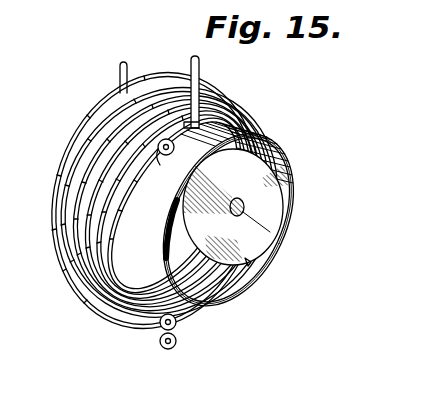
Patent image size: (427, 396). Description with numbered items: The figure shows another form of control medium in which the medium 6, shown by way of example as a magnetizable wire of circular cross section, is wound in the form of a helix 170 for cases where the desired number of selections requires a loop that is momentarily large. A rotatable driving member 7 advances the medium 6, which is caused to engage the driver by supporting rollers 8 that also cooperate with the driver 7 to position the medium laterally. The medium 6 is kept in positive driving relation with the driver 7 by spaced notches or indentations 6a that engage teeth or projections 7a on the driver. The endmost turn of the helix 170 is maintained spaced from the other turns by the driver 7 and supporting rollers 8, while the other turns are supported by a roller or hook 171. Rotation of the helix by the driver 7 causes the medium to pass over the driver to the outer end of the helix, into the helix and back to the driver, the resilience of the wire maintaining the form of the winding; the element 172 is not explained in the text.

The spiral coil assembly 170 is at (168, 202).
The support posts 171 is at (128, 72).
The coil wire 6 is at (52, 204).
The coil wire end 6a is at (270, 268).
The central disk 7 is at (276, 178).
The disk hub and lug 7a is at (177, 222).
The rollers 8 is at (160, 165).
The adjacent figure element 172 is at (27, 389).